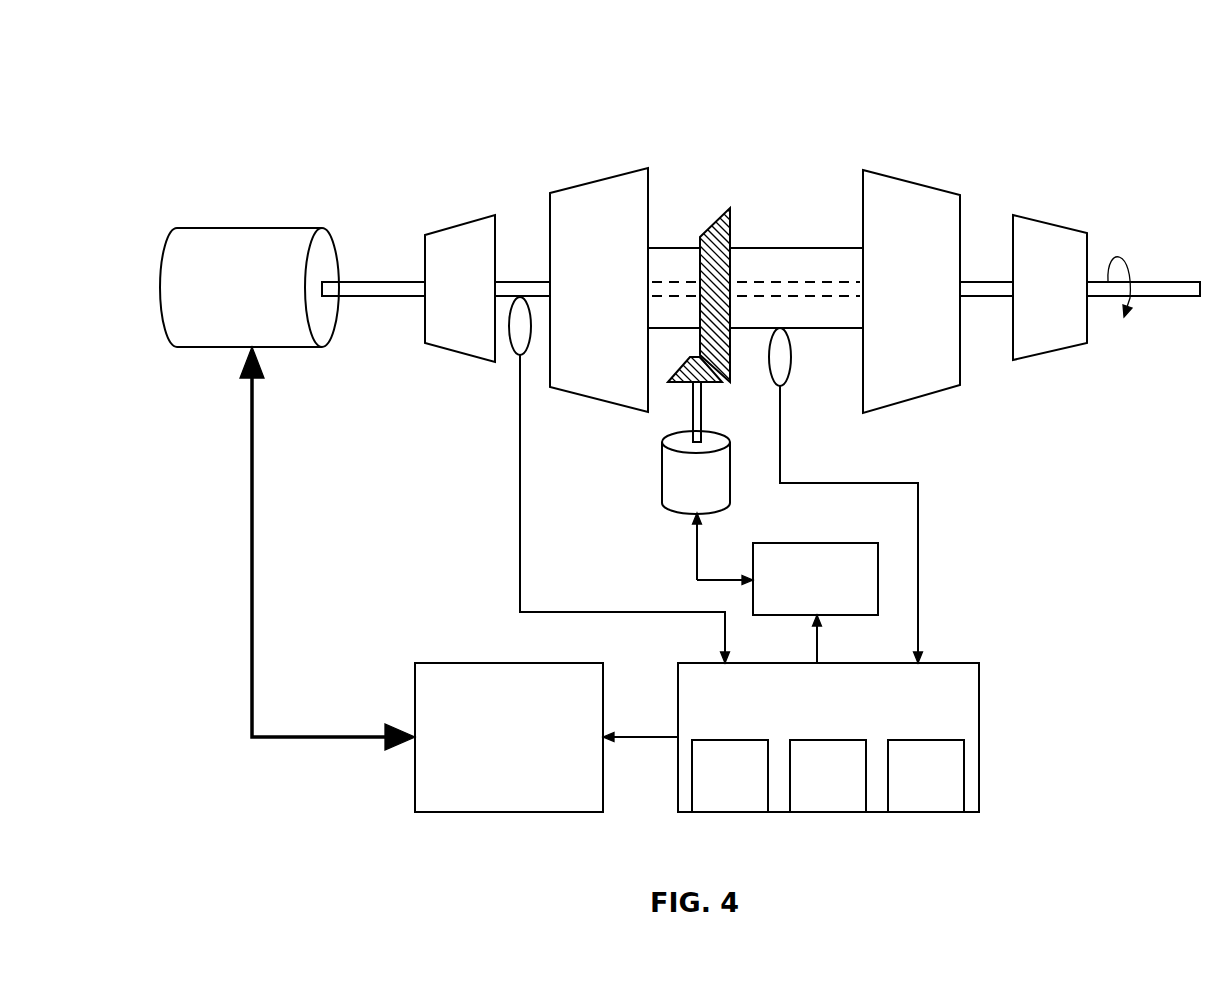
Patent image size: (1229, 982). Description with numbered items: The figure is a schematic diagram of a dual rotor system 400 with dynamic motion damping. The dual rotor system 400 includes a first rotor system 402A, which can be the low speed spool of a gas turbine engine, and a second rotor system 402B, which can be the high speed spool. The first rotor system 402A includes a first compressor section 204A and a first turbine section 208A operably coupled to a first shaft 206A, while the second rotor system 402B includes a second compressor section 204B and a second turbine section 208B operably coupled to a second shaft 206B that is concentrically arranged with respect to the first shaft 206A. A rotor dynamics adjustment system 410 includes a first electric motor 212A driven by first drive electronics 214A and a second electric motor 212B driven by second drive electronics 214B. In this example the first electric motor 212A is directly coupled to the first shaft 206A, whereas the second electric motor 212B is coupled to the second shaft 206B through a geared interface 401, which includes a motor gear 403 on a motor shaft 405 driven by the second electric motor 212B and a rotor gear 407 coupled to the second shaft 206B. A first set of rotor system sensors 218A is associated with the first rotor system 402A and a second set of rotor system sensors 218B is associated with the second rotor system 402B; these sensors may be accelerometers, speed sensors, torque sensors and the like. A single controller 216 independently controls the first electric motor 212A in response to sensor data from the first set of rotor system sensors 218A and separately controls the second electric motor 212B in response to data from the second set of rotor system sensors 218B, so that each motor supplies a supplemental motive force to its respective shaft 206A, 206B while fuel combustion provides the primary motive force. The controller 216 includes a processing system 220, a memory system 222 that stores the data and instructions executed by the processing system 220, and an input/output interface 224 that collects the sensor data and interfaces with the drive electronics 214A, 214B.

The dual rotor system 400 is at (881, 40).
The geared interface 401 is at (653, 150).
The first rotor system 402A is at (392, 373).
The second rotor system 402B is at (966, 411).
The motor gear 403 is at (702, 383).
The motor shaft 405 is at (690, 410).
The rotor gear 407 is at (715, 222).
The rotor dynamics adjustment system 410 is at (214, 688).
The first compressor section 204A is at (462, 224).
The second compressor section 204B is at (600, 180).
The first shaft 206A is at (395, 281).
The second shaft 206B is at (768, 248).
The first turbine section 208A is at (1060, 226).
The second turbine section 208B is at (912, 182).
The first electric motor 212A is at (223, 228).
The second electric motor 212B is at (660, 475).
The first drive electronics 214A is at (476, 750).
The second drive electronics 214B is at (782, 598).
The controller 216 is at (803, 711).
The first set of rotor system sensors 218A is at (512, 370).
The second set of rotor system sensors 218B is at (806, 387).
The processing system 220 is at (705, 791).
The memory system 222 is at (803, 791).
The input/output interface 224 is at (901, 791).